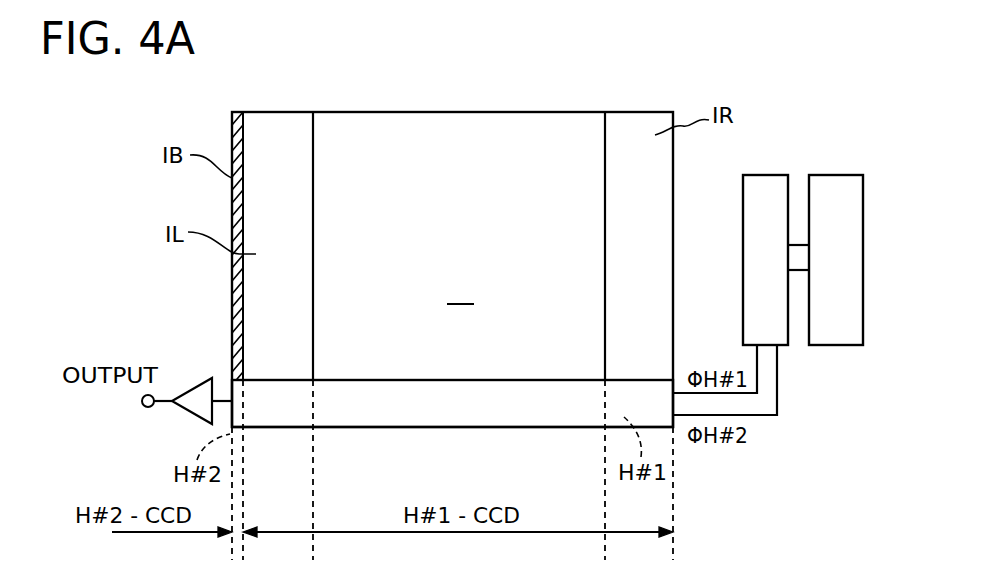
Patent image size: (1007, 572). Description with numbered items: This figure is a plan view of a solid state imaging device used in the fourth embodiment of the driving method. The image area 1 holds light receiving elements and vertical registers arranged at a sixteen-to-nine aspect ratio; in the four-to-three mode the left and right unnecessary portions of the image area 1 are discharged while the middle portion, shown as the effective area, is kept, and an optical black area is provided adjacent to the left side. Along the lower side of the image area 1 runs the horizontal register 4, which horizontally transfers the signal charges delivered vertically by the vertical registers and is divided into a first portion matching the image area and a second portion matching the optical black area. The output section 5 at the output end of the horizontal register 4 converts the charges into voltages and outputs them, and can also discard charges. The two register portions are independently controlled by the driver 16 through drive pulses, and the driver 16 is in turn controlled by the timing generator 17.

The image area 1 is at (562, 112).
The horizontal register 4 is at (412, 426).
The output section 5 is at (196, 392).
The driver 16 is at (772, 175).
The timing generator 17 is at (839, 175).